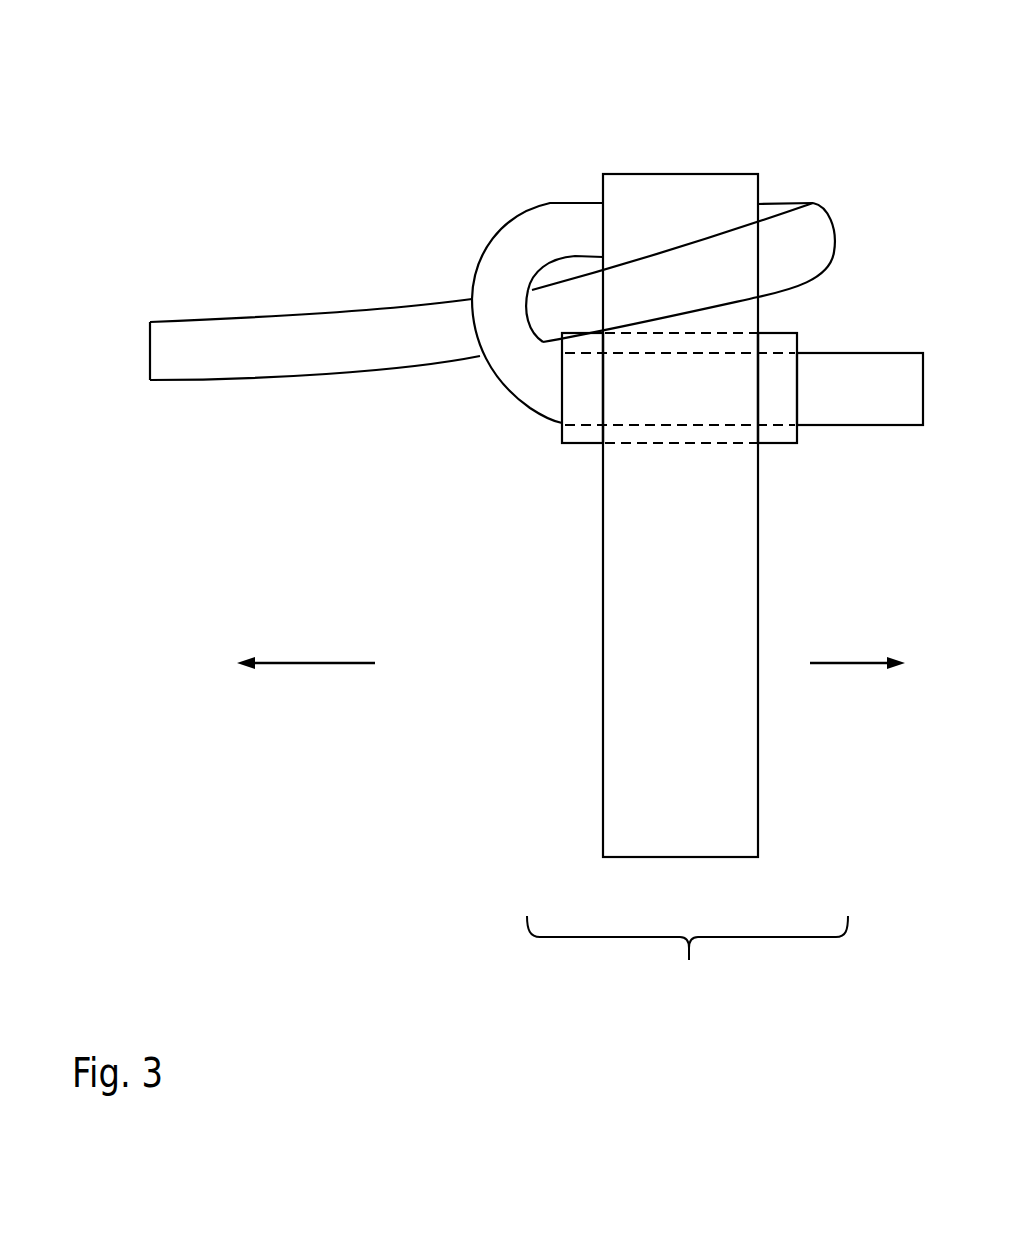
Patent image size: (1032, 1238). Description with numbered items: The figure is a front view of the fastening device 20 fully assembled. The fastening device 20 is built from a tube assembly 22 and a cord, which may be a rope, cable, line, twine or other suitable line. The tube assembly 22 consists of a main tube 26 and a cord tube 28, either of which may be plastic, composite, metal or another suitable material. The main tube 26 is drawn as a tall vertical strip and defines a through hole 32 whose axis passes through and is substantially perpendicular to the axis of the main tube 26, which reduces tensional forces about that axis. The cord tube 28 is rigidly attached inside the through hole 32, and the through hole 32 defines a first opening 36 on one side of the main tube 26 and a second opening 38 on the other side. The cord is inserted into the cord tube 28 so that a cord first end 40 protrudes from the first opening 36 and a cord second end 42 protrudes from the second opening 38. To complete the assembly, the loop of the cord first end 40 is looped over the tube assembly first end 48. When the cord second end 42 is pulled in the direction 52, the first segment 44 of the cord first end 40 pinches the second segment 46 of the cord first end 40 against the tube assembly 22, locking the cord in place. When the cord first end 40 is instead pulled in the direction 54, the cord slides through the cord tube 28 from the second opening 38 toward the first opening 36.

The fastening device 20 is at (183, 116).
The tube assembly 22 is at (687, 957).
The main tube 26 is at (665, 633).
The cord tube 28 is at (782, 343).
The through hole 32 is at (633, 443).
The first opening 36 is at (602, 405).
The second opening 38 is at (759, 405).
The cord first end 40 is at (287, 360).
The cord second end 42 is at (840, 388).
The first segment 44 is at (495, 320).
The second segment 46 is at (452, 342).
The tube assembly first end 48 is at (687, 203).
The direction 52 is at (850, 664).
The direction 54 is at (315, 665).